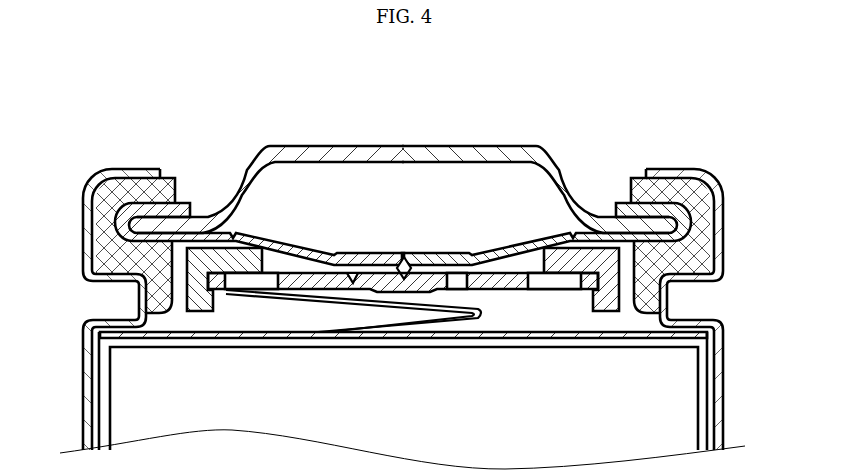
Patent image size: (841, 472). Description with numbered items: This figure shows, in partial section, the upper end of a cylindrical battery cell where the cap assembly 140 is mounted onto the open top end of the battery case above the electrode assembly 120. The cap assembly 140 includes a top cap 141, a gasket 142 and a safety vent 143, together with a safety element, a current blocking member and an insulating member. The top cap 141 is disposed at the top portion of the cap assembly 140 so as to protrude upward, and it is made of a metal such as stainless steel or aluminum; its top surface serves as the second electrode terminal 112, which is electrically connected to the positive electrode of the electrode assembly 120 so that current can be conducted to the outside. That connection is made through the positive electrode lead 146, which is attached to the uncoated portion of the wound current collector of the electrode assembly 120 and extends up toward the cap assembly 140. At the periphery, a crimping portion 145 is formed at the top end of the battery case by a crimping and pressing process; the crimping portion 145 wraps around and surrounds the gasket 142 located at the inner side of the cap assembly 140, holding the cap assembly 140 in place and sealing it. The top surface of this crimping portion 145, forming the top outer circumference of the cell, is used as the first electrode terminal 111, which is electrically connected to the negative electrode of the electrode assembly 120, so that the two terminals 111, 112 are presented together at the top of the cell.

The first electrode terminal 111 is at (127, 169).
The second electrode terminal 112 is at (405, 146).
The electrode assembly 120 is at (677, 393).
The cap assembly 140 is at (329, 120).
The top cap 141 is at (514, 153).
The gasket 142 is at (97, 220).
The safety vent 143 is at (468, 236).
The crimping portion 145 is at (90, 179).
The positive electrode lead 146 is at (402, 302).